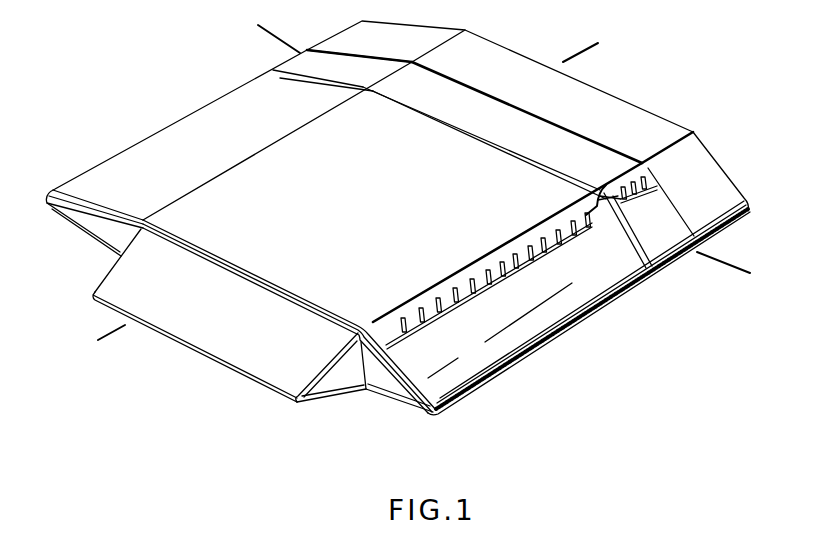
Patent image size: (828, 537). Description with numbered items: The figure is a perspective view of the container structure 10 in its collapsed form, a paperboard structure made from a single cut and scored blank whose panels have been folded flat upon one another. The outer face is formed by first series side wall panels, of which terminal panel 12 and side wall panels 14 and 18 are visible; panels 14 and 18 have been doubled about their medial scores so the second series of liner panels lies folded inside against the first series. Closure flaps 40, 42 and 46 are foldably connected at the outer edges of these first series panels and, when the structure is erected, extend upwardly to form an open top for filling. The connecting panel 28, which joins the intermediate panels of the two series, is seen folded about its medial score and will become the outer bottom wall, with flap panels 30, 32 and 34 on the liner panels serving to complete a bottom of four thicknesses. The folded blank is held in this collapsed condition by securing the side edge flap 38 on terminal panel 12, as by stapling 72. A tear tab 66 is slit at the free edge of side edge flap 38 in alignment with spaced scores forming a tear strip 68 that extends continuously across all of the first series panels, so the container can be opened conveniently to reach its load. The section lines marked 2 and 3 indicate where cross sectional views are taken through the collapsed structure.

The container structure 10 is at (391, 243).
The terminal panel of the first series 12 is at (340, 218).
The side wall panel 14 is at (197, 149).
The side wall panel 18 is at (497, 315).
The connecting panel 28 is at (217, 326).
The flap panel 30 is at (350, 365).
The flap panel 32 is at (110, 235).
The flap panel 34 is at (405, 392).
The side edge flap 38 is at (467, 278).
The closure flap 40 is at (533, 110).
The closure flap 42 is at (377, 53).
The closure flap 46 is at (684, 200).
The tear tab 66 is at (611, 213).
The tear strip 68 is at (440, 125).
The stapling 72 is at (418, 310).
The section line 2- 2 is at (567, 37).
The section line 3- 3 is at (252, 44).